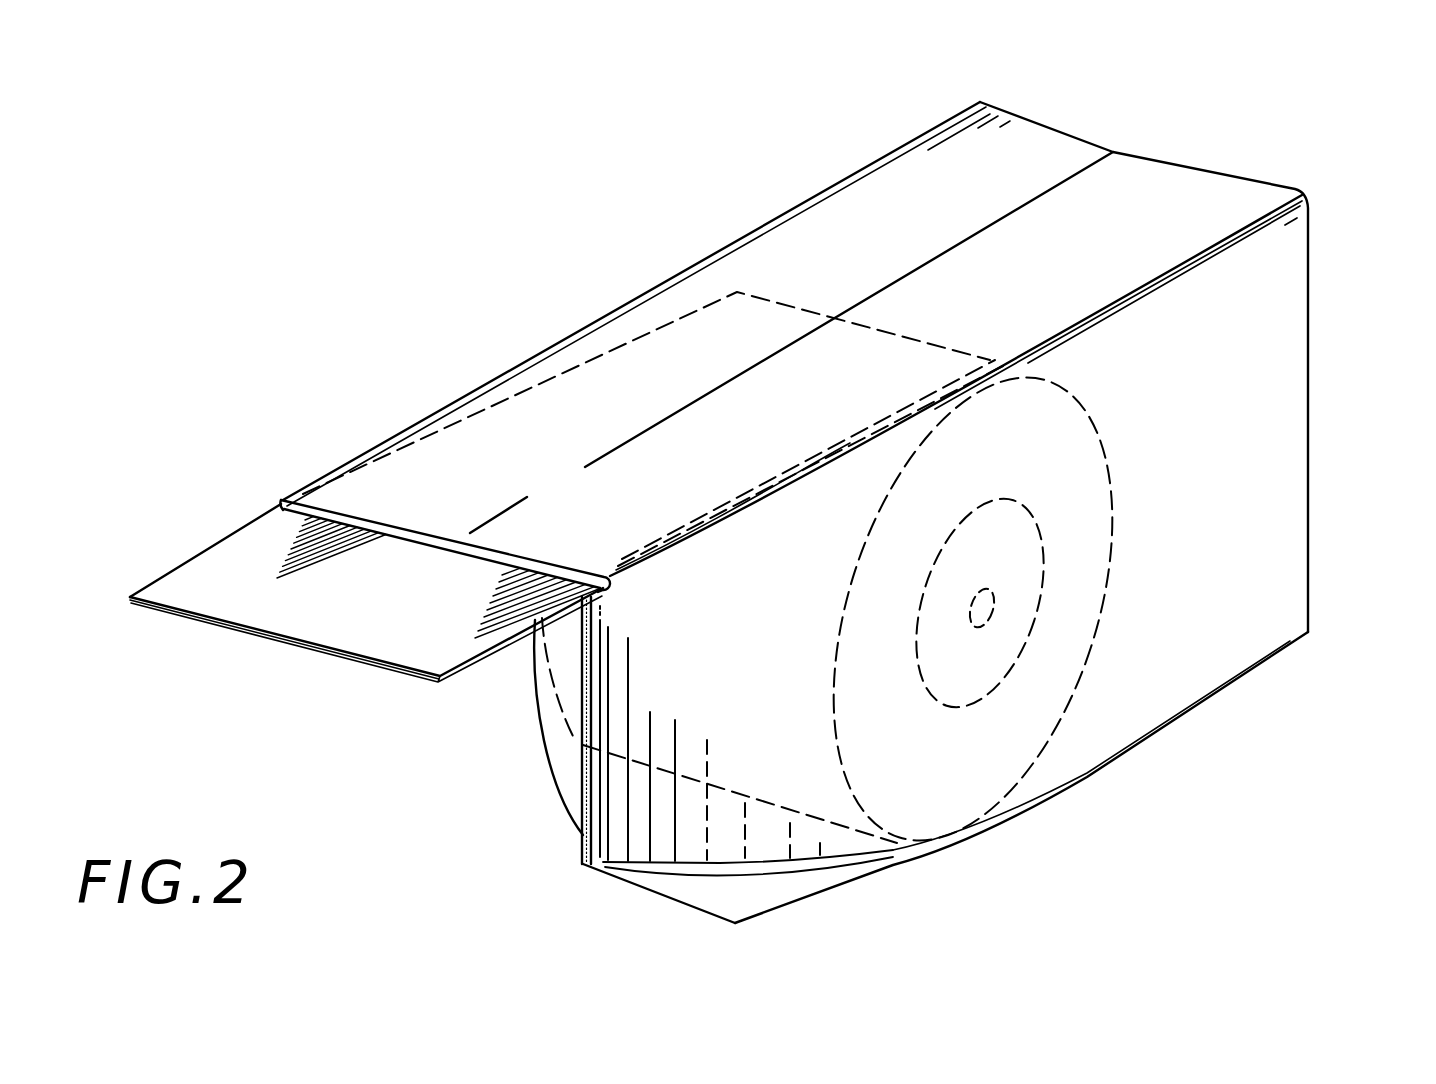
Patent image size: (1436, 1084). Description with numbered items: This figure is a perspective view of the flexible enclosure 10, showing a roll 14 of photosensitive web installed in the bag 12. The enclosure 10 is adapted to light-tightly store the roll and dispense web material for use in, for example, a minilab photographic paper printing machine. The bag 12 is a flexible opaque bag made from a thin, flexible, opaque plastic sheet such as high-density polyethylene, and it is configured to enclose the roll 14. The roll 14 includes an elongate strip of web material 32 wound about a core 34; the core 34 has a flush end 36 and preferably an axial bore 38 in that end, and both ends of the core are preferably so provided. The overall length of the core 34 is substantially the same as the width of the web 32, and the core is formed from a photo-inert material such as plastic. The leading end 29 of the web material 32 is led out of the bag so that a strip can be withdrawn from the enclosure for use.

The flexible enclosure 10 is at (782, 512).
The flexible opaque bag 12 is at (1309, 352).
The roll 14 is at (640, 685).
The leading end 29 is at (201, 622).
The web material 32 is at (407, 612).
The core 34 is at (985, 706).
The flush end 36 is at (1002, 647).
The axial bore 38 is at (988, 612).